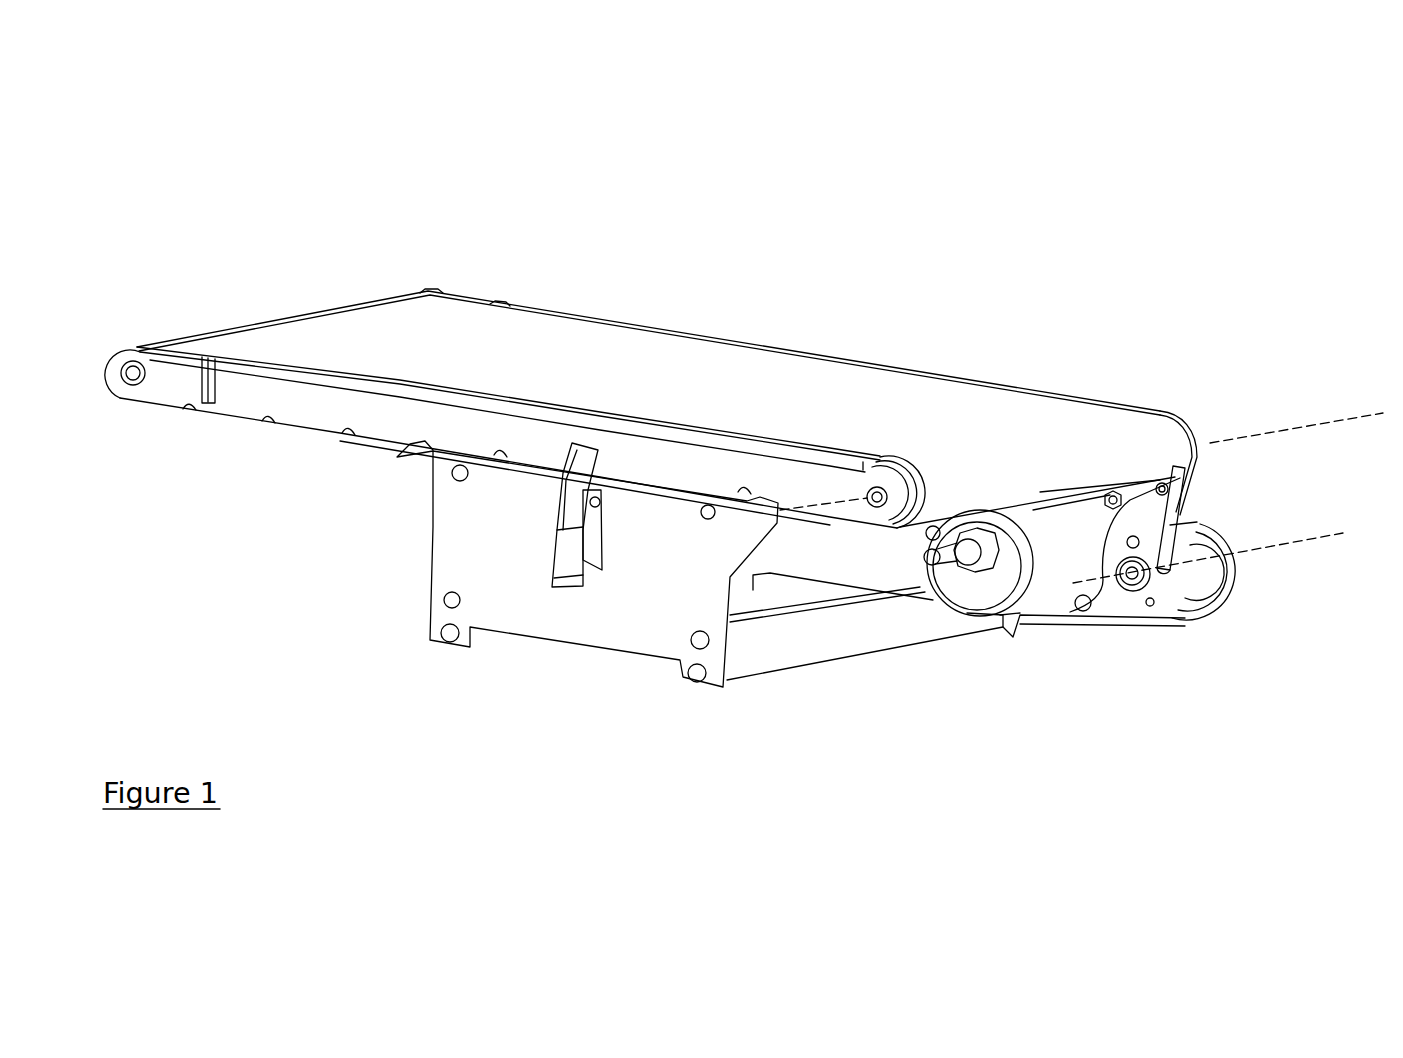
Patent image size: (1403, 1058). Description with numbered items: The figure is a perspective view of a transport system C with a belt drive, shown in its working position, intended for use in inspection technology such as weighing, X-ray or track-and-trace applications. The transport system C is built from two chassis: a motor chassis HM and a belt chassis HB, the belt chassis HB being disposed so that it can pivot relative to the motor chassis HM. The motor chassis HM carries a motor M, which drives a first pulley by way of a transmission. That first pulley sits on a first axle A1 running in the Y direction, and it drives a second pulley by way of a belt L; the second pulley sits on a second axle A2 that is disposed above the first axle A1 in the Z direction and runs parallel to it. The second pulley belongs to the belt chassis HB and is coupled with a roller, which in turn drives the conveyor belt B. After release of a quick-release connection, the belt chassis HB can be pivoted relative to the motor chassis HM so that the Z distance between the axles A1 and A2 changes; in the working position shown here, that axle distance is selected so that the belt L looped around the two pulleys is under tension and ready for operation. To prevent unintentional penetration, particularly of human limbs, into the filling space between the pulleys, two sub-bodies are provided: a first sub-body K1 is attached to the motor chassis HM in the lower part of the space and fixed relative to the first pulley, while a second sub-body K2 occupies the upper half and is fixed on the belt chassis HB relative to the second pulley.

The transport system C is at (942, 259).
The conveyor belt B is at (697, 363).
The belt chassis HB is at (315, 403).
The motor chassis HM is at (765, 635).
The motor M is at (963, 585).
The first sub-body K1 is at (1148, 543).
The second sub-body K2 is at (1148, 503).
The belt L is at (1192, 466).
The first axle A1 is at (1292, 543).
The second axle A2 is at (1248, 432).